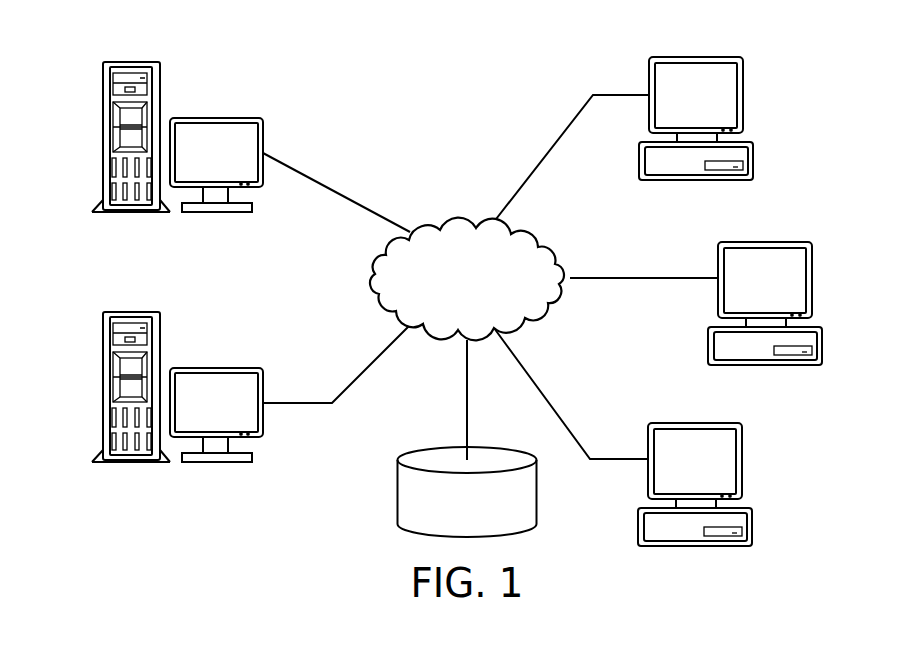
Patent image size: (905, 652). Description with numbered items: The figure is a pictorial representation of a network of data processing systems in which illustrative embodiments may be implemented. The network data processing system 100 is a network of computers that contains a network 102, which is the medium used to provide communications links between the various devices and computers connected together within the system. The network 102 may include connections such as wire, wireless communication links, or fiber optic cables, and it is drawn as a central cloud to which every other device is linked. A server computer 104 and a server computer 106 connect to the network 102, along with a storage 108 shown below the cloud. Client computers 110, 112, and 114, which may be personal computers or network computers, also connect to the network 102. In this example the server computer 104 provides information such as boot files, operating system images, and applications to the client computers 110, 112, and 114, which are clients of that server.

The network data processing system 100 is at (332, 65).
The network 102 is at (460, 217).
The server computer 104 is at (103, 115).
The server computer 106 is at (103, 390).
The storage 108 is at (398, 495).
The client computer 110 is at (755, 161).
The client computer 112 is at (824, 343).
The client computer 114 is at (754, 525).